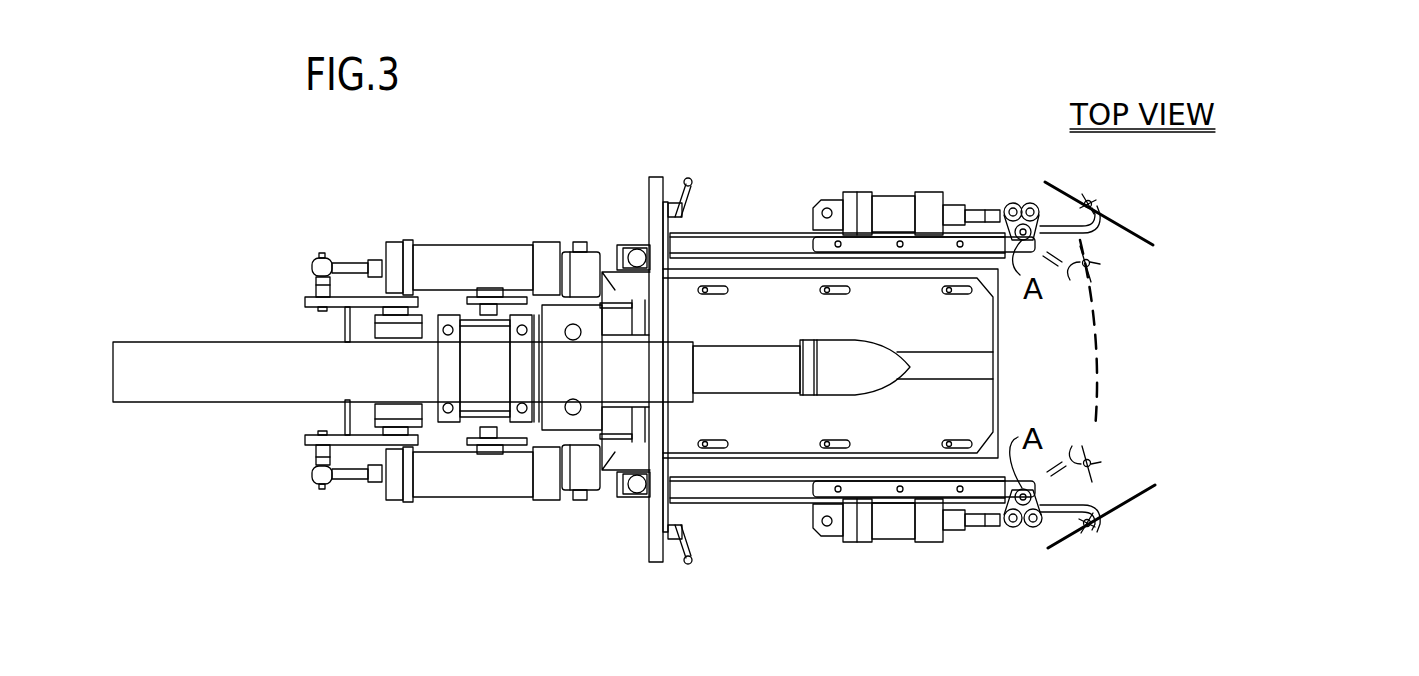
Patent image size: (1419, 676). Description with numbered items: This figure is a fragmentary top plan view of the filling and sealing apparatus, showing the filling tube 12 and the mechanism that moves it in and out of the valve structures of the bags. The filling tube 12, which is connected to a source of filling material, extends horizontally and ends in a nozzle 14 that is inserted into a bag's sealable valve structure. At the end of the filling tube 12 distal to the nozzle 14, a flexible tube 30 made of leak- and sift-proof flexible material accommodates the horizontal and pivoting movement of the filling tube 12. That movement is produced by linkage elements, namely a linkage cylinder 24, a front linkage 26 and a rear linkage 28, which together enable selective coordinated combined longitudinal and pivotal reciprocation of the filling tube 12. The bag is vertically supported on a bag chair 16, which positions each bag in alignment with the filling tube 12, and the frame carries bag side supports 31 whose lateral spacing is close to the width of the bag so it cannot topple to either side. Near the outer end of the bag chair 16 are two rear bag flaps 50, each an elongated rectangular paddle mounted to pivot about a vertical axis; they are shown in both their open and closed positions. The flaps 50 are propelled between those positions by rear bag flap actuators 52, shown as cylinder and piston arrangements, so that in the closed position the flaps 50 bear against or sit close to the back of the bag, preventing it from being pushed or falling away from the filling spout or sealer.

The flexible tube 30 is at (233, 342).
The rear linkage 28 is at (305, 445).
The linkage cylinder 24 is at (478, 242).
The front linkage 26 is at (510, 298).
The bag side supports 31 is at (730, 232).
The filling tube 12 is at (788, 335).
The bag chair 16 is at (967, 316).
The nozzle 14 is at (850, 370).
The rear bag flap actuators 52 is at (956, 190).
The rear bag flaps 50 is at (1102, 405).